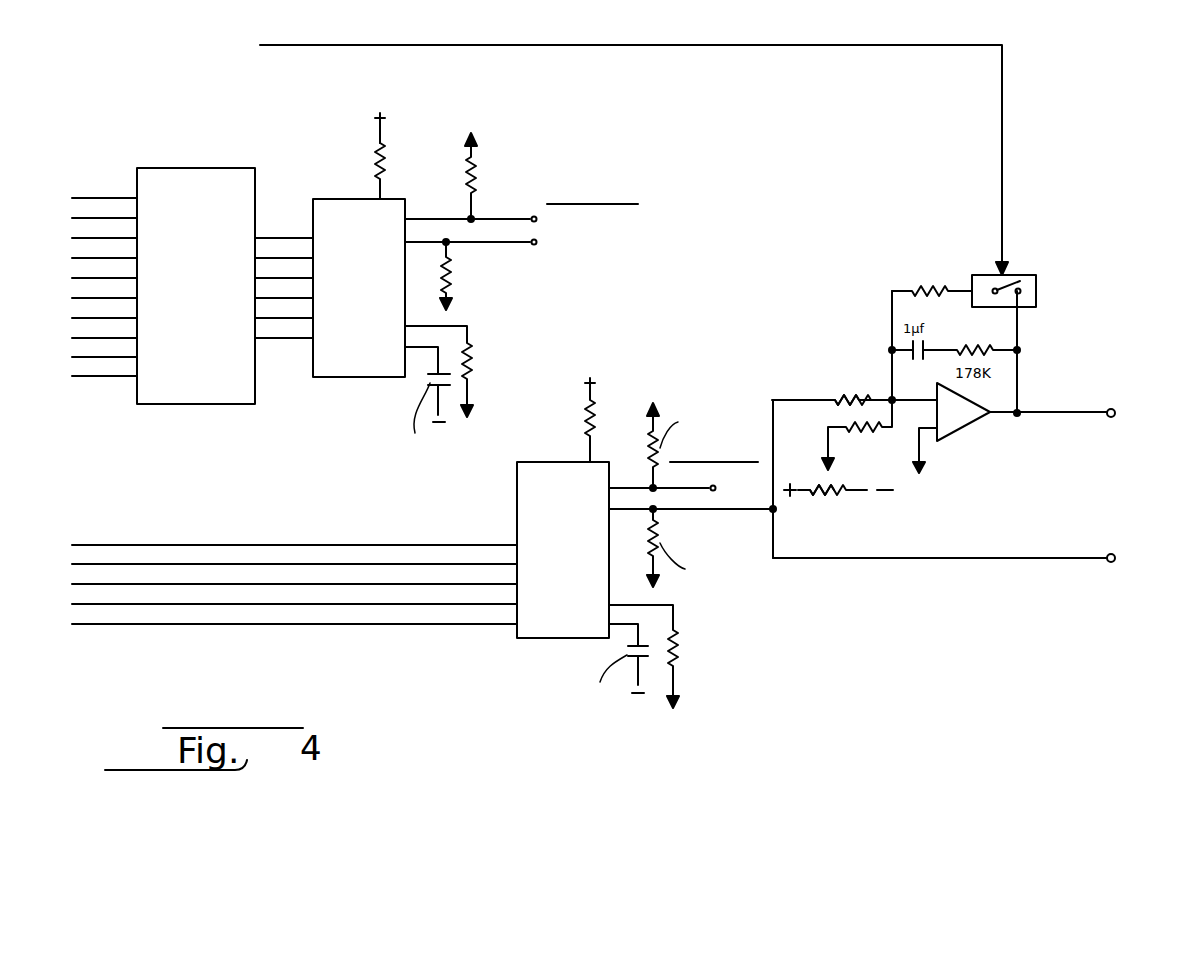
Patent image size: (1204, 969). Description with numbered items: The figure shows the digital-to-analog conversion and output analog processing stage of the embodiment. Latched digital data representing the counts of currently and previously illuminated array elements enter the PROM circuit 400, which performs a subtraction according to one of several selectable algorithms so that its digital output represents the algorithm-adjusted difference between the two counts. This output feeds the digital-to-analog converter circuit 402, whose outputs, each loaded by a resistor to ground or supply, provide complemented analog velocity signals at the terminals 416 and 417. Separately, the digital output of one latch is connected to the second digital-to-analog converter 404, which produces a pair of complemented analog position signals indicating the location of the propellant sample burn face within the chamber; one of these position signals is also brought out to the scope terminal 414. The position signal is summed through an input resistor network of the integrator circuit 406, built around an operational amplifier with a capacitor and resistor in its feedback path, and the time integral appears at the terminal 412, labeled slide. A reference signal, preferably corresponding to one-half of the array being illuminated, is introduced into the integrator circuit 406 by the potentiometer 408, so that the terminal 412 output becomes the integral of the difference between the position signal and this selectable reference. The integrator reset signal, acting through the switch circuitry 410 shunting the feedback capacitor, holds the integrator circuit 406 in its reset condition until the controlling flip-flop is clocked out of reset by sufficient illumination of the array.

The PROM circuit 400 is at (210, 405).
The digital-to-analog converter circuit 402 is at (388, 378).
The second digital-to-analog converter 404 is at (515, 500).
The integrator circuit 406 is at (866, 347).
The potentiometer 408 is at (893, 475).
The integrator reset circuitry 410 is at (956, 262).
The integrator output terminal 412 is at (1112, 405).
The scope output terminal 414 is at (1110, 564).
The complemented velocity terminal 416 is at (537, 205).
The velocity terminal 417 is at (537, 250).